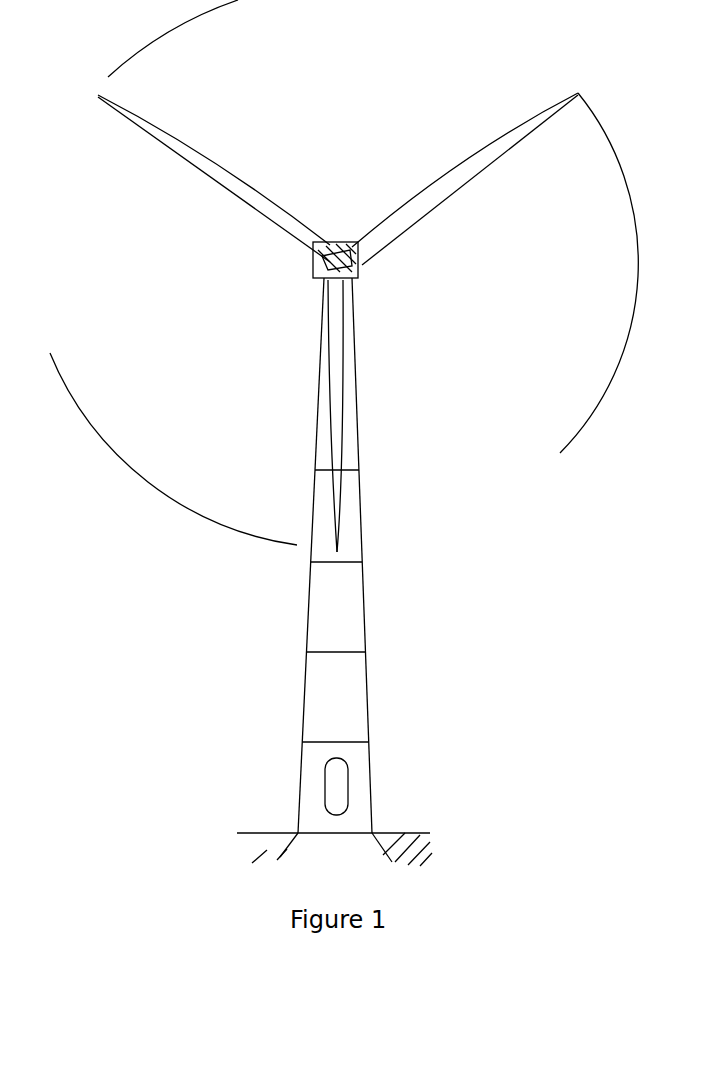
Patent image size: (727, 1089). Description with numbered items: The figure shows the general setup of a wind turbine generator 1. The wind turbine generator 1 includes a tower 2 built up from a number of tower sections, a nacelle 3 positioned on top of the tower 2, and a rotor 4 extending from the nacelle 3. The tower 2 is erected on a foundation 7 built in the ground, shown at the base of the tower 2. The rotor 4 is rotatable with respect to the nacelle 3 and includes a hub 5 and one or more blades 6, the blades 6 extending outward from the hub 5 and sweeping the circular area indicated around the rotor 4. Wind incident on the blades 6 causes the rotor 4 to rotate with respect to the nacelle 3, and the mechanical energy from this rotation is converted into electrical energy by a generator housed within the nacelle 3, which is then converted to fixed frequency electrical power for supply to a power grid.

The wind turbine generator 1 is at (112, 631).
The tower 2 is at (350, 708).
The nacelle 3 is at (358, 270).
The rotor 4 is at (575, 433).
The hub 5 is at (335, 258).
The blades 6 is at (438, 191).
The foundation 7 is at (298, 843).